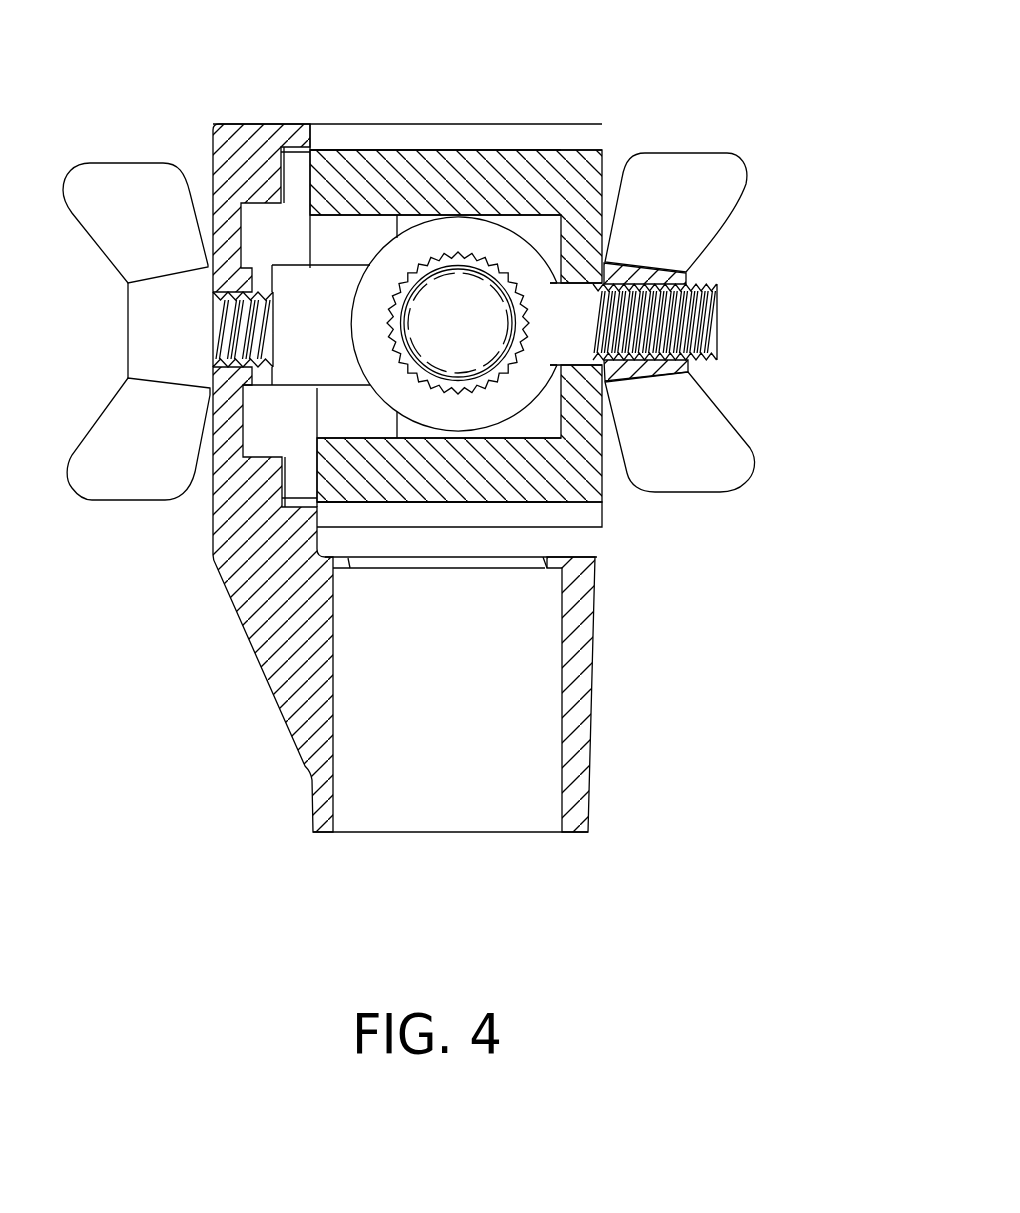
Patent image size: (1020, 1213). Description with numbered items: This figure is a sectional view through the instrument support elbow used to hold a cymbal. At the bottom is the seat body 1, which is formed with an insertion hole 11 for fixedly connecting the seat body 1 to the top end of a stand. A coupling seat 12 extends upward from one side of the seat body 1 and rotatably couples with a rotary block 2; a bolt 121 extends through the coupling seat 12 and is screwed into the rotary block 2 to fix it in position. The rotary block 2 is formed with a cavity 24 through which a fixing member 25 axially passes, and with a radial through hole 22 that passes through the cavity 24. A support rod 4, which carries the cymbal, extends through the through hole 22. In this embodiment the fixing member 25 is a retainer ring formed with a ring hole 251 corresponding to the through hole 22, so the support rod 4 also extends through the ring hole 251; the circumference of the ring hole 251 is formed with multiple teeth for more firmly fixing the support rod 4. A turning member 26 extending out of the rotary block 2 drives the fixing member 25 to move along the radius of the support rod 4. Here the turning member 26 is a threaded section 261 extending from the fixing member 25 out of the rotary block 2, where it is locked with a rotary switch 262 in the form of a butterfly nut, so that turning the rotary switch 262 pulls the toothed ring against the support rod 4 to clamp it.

The seat body 1 is at (583, 678).
The insertion hole 11 is at (427, 800).
The coupling seat 12 is at (235, 128).
The bolt 121 is at (125, 483).
The rotary block 2 is at (565, 165).
The radial through hole 22 is at (560, 360).
The cavity 24 is at (339, 224).
The fixing member 25 is at (443, 227).
The ring hole 251 is at (500, 250).
The turning member 26 is at (698, 246).
The threaded section 261 is at (703, 316).
The rotary switch 262 is at (693, 153).
The support rod 4 is at (428, 368).